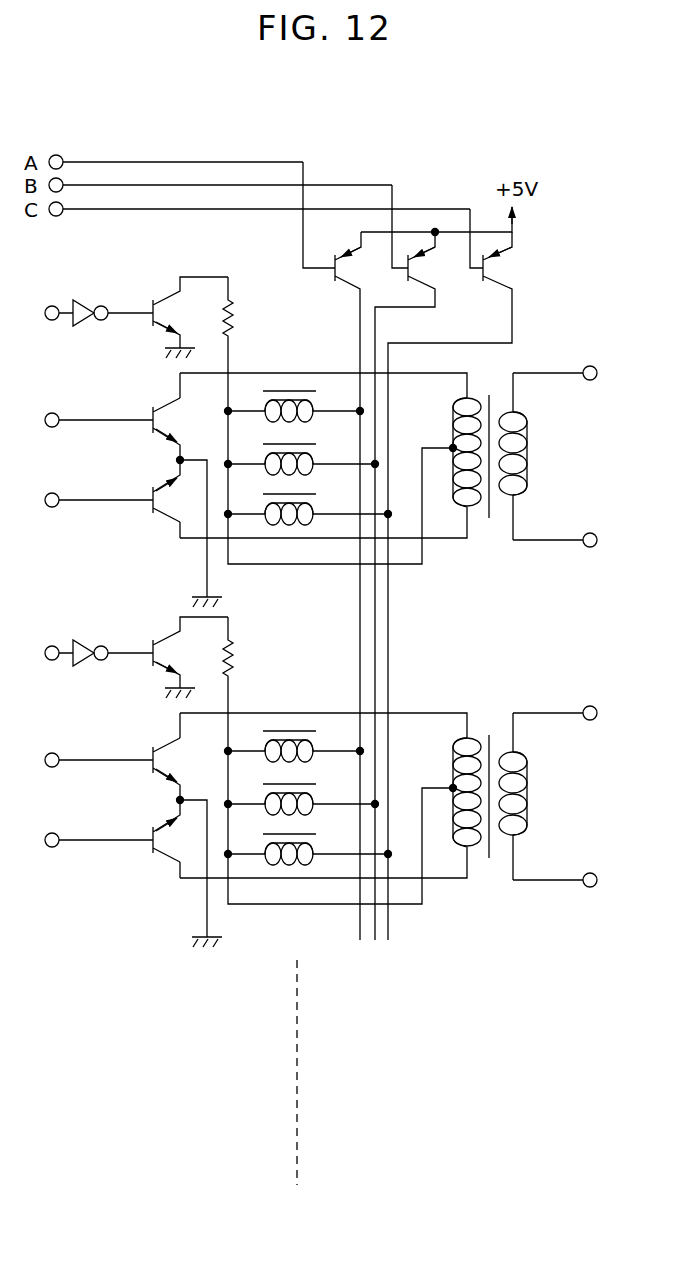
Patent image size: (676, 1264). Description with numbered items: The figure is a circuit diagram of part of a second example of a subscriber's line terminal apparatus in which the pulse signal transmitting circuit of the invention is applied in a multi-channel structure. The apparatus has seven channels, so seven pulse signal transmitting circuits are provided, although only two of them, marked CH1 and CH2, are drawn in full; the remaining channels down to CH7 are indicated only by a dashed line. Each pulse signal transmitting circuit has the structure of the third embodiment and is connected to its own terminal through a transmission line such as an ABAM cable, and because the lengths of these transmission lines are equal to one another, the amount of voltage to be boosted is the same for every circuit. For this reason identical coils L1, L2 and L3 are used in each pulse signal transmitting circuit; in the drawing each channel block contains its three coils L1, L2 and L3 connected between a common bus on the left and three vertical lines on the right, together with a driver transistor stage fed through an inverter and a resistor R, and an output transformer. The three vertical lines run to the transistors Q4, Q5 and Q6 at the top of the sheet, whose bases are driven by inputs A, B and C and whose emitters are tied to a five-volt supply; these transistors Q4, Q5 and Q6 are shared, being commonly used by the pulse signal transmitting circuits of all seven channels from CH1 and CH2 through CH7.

The transistor Q4 is at (343, 551).
The transistor Q5 is at (416, 562).
The transistor Q6 is at (461, 574).
The coil L1 is at (294, 572).
The coil L2 is at (302, 625).
The coil L3 is at (308, 675).
The resistor R is at (239, 495).
The channel 1 circuit CH1 is at (321, 442).
The channel 2 circuit CH2 is at (321, 782).
The channel 7 circuit (omitted) CH7 is at (298, 1101).